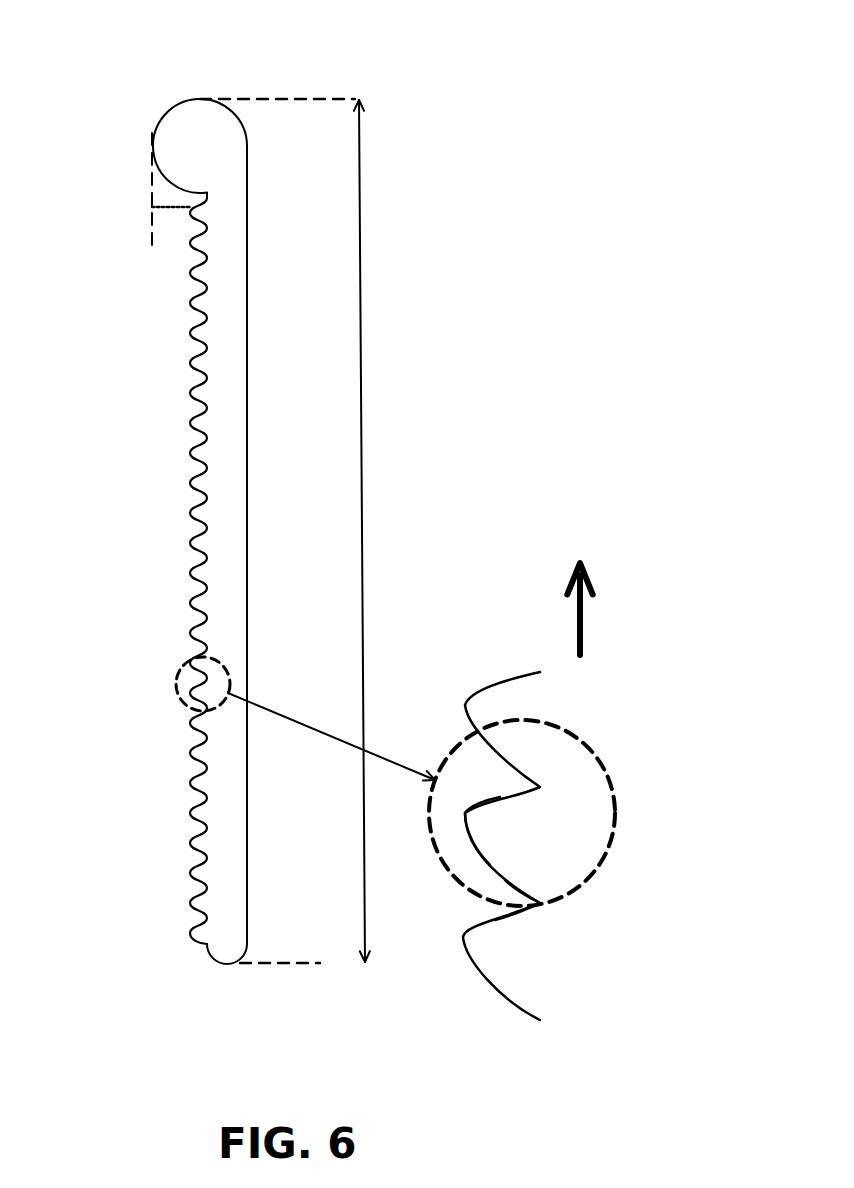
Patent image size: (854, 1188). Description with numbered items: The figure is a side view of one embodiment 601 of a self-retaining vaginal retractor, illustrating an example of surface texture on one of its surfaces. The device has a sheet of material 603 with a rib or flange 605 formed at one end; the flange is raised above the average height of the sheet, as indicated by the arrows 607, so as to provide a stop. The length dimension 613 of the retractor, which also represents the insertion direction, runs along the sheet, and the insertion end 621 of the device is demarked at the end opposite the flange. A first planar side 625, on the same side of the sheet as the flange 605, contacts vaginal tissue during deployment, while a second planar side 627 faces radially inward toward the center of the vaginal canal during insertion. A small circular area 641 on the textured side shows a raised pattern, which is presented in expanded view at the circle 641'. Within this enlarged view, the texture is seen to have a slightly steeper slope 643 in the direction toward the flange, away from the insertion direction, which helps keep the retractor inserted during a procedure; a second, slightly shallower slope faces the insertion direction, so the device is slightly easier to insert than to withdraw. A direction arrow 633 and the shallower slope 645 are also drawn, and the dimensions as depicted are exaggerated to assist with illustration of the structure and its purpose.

The self-retaining vaginal retractor embodiment 601 is at (333, 72).
The sheet of material 603 is at (232, 200).
The rib or flange 605 is at (157, 130).
The arrows indicating flange height 607 is at (150, 208).
The length dimension 613 is at (359, 258).
The insertion end 621 is at (222, 972).
The first planar side 625 is at (187, 478).
The second planar side 627 is at (248, 475).
The direction arrow 633 is at (578, 608).
The circular area 641 is at (164, 691).
The expanded view circle 641' is at (460, 846).
The steeper slope 643 is at (477, 812).
The peak of serration 645 is at (523, 882).